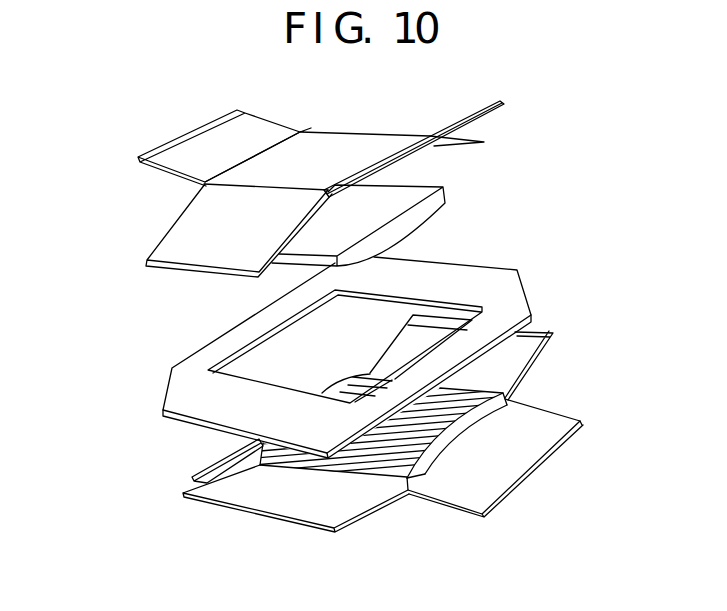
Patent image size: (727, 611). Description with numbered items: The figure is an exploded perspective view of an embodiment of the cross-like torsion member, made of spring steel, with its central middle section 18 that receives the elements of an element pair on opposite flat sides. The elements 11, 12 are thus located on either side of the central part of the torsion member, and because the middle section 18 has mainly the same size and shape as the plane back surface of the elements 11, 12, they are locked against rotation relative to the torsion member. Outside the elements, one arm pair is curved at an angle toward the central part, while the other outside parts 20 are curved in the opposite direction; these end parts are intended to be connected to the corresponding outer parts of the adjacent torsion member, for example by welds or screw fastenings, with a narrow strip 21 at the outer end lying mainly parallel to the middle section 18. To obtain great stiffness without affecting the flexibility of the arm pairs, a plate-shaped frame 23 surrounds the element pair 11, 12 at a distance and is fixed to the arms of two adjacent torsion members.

The element 11 is at (437, 215).
The element 12 is at (426, 470).
The middle section 18 is at (360, 147).
The outside parts 20 is at (197, 143).
The narrow strip 21 is at (500, 492).
The plate-shaped frame 23 is at (490, 270).